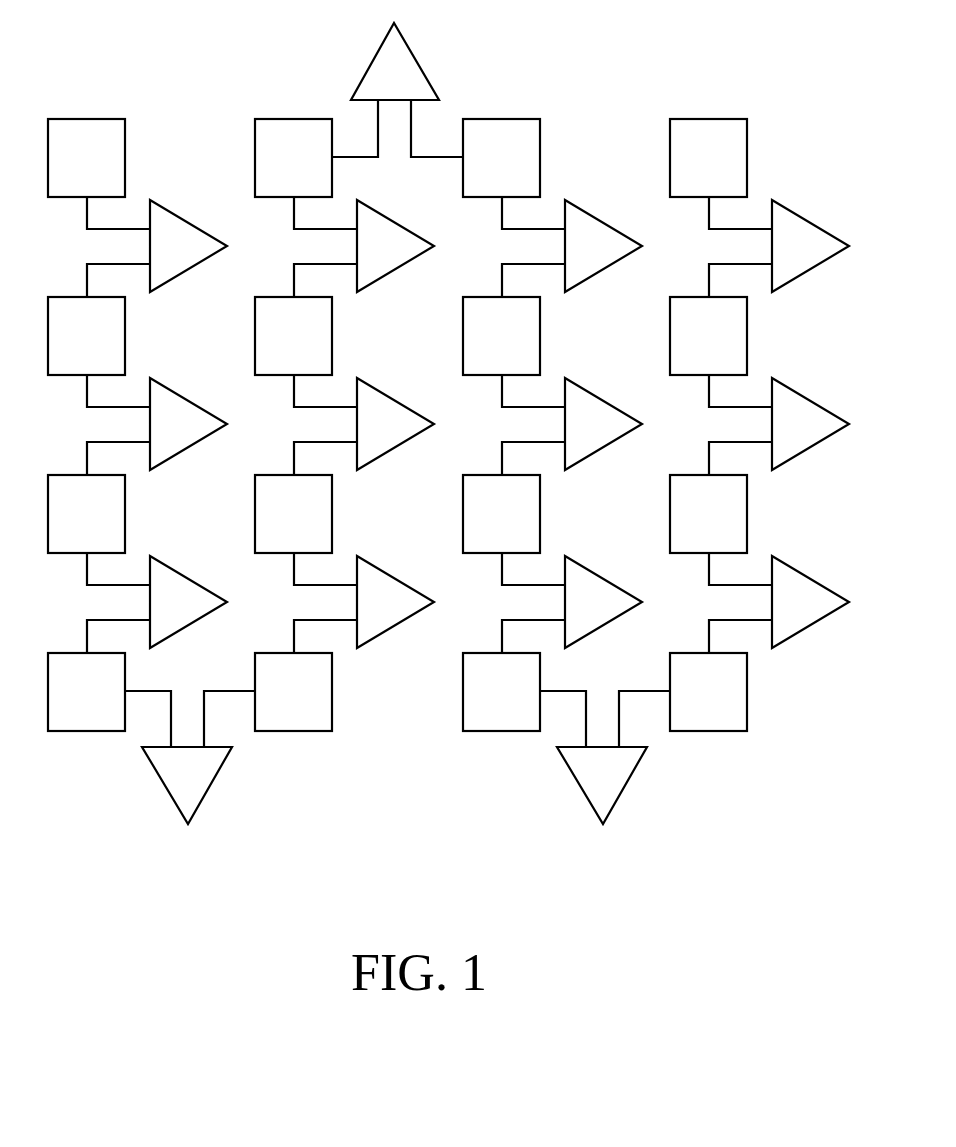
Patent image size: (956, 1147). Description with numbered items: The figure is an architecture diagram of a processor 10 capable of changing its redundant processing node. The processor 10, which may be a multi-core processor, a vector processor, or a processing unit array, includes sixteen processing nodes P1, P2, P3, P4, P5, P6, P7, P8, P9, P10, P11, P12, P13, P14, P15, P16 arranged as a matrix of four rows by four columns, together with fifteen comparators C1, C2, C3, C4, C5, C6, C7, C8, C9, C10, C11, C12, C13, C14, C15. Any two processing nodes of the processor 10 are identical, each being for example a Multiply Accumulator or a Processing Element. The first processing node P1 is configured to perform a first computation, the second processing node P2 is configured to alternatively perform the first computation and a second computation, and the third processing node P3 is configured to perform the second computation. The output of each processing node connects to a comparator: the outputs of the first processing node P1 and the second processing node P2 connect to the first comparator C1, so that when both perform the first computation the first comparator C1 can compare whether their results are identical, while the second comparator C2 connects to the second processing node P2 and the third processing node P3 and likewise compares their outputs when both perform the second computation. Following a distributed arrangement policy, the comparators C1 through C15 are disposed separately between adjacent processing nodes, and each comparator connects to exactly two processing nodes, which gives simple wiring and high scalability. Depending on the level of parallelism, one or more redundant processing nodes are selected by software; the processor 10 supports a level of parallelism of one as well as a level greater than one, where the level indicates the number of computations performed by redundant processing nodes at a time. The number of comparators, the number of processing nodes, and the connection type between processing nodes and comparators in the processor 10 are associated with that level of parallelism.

The processor 10 is at (165, 23).
The first processing node P1 is at (86, 158).
The second processing node P2 is at (86, 336).
The third processing node P3 is at (86, 514).
The processing node P4 is at (86, 692).
The processing node P5 is at (293, 692).
The processing node P6 is at (293, 514).
The processing node P7 is at (293, 336).
The processing node P8 is at (293, 158).
The processing node P9 is at (501, 158).
The processing node P10 is at (501, 336).
The processing node P11 is at (501, 514).
The processing node P12 is at (501, 692).
The processing node P13 is at (708, 692).
The processing node P14 is at (708, 514).
The processing node P15 is at (708, 336).
The processing node P16 is at (708, 158).
The first comparator C1 is at (188, 246).
The second comparator C2 is at (188, 424).
The comparator C3 is at (188, 602).
The comparator C4 is at (187, 785).
The comparator C5 is at (395, 602).
The comparator C6 is at (395, 424).
The comparator C7 is at (395, 246).
The comparator C8 is at (395, 61).
The comparator C9 is at (603, 246).
The comparator C10 is at (603, 424).
The comparator C11 is at (603, 602).
The comparator C12 is at (602, 785).
The comparator C13 is at (810, 602).
The comparator C14 is at (810, 424).
The comparator C15 is at (810, 246).